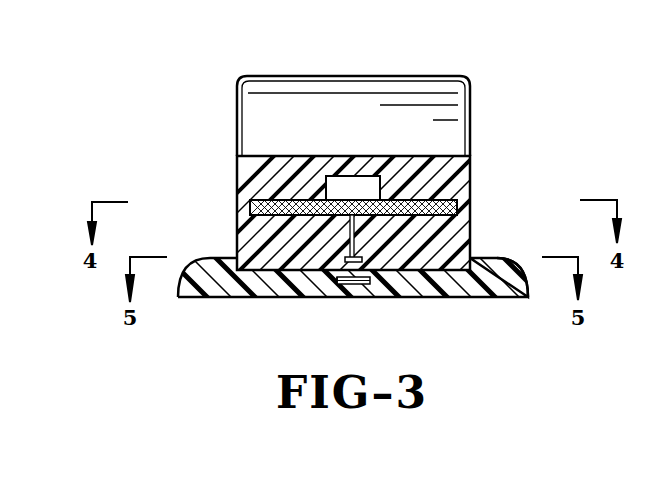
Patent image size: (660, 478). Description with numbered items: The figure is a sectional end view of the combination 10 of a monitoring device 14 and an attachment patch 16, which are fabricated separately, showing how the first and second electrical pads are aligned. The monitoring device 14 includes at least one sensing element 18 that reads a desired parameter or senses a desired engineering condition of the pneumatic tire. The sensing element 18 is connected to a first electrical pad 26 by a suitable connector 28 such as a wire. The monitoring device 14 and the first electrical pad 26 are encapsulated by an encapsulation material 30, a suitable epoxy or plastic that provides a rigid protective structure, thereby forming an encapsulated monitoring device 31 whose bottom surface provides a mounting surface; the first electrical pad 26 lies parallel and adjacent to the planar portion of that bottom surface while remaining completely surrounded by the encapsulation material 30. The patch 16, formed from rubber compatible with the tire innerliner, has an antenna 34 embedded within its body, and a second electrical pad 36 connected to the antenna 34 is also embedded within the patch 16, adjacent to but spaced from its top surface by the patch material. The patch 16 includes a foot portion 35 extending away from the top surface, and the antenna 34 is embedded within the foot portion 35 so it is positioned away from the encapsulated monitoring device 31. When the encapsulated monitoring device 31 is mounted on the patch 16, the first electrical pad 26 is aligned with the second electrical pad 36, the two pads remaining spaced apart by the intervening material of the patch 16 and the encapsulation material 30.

The combination 10 is at (508, 87).
The monitoring device 14 is at (462, 206).
The attachment patch 16 is at (245, 303).
The sensing element 18 is at (346, 180).
The first electrical pad 26 is at (345, 260).
The connector 28 is at (358, 262).
The encapsulation material 30 is at (243, 167).
The encapsulated monitoring device 31 is at (474, 138).
The antenna 34 is at (355, 287).
The foot portion 35 is at (482, 256).
The second electrical pad 36 is at (335, 283).